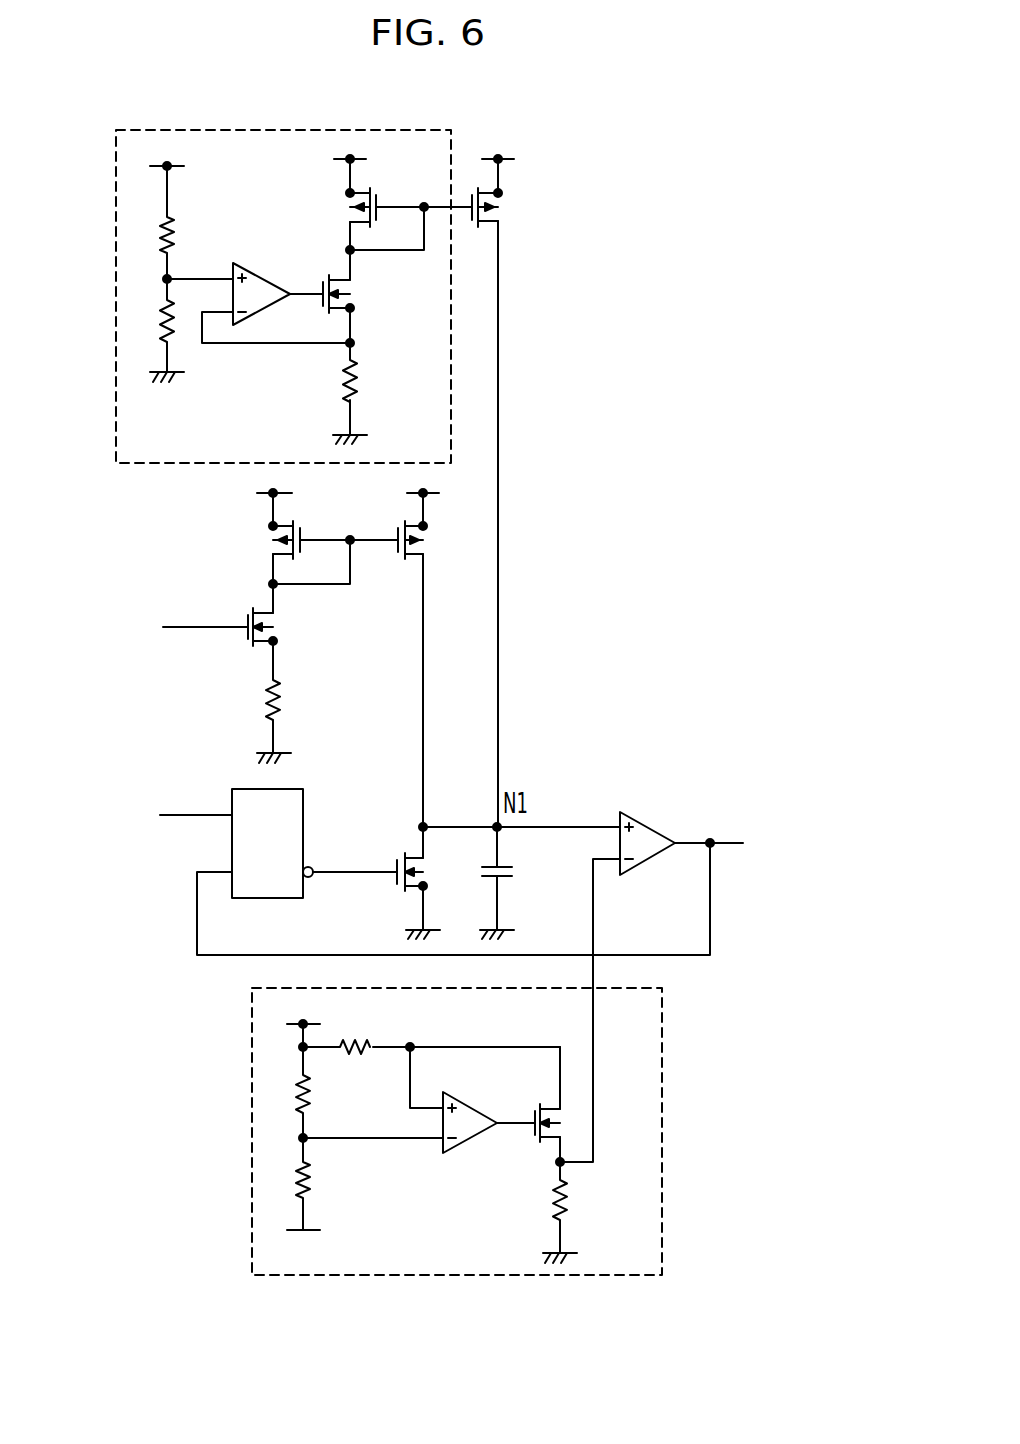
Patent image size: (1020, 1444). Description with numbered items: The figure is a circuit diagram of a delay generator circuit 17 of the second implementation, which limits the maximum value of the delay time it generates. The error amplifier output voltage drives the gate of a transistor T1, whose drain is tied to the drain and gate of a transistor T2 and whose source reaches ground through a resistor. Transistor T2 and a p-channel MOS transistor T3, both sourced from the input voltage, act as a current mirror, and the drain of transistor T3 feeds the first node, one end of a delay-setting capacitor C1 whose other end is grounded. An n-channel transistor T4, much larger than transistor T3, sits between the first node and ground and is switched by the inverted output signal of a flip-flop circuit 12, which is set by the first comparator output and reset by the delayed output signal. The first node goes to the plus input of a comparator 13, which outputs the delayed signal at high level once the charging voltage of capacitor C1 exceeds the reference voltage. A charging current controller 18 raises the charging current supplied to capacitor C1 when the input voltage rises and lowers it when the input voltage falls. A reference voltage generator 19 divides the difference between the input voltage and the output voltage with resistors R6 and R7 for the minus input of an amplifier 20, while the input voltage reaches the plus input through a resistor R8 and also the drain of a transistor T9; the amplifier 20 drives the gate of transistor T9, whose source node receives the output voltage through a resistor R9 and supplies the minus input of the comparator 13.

The flip-flop circuit 12 is at (305, 802).
The comparator 13 is at (647, 823).
The delay generator circuit 17 is at (602, 165).
The charging current controller 18 is at (113, 162).
The reference voltage generator 19 is at (663, 1058).
The amplifier 20 is at (473, 1103).
The transistor T1 is at (267, 617).
The transistor T2 is at (277, 548).
The MOS transistor T3 is at (420, 551).
The transistor T4 is at (420, 859).
The transistor T9 is at (547, 1107).
The capacitor C1 is at (500, 865).
The resistor R6 is at (312, 1100).
The resistor R7 is at (312, 1185).
The resistor R8 is at (357, 1038).
The resistor R9 is at (565, 1207).